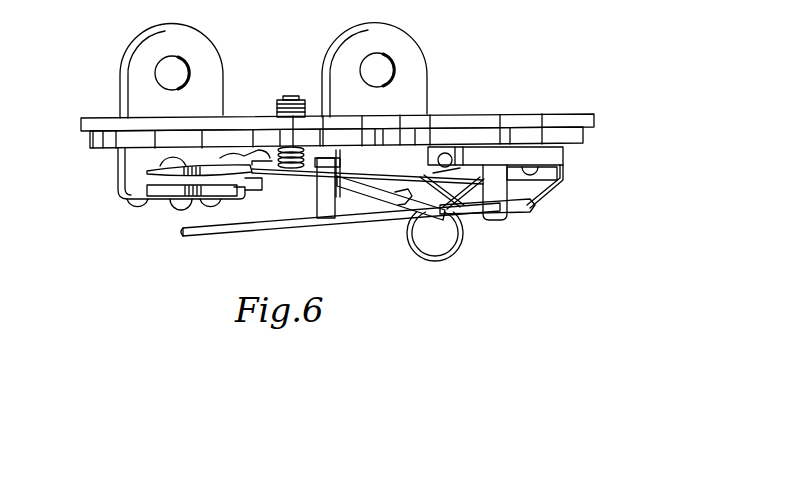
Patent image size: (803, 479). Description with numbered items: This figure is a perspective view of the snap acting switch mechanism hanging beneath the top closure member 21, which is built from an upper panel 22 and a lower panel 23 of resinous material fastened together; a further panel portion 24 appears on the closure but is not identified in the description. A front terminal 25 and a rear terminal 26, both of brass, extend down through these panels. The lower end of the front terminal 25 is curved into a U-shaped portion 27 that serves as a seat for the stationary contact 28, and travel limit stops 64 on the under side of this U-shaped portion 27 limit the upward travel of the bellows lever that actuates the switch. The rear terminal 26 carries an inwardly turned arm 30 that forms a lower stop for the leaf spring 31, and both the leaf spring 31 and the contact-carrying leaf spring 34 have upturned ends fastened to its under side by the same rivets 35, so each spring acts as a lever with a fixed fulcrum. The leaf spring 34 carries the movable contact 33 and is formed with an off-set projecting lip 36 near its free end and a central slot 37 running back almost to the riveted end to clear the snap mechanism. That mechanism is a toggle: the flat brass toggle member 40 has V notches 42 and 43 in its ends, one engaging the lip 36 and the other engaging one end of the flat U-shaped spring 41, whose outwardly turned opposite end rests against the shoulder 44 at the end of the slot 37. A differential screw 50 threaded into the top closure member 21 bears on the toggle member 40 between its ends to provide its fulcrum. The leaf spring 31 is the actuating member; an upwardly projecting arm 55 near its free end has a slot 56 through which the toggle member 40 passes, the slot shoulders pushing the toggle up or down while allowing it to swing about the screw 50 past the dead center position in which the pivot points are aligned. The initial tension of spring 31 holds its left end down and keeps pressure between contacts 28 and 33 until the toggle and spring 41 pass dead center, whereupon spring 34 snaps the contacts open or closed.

The top closure member 21 is at (360, 113).
The upper panel 22 is at (593, 120).
The lower panel 23 is at (583, 137).
The plate segment 24 is at (347, 120).
The front terminal 25 is at (135, 52).
The rear terminal 26 is at (342, 44).
The U-shaped portion 27 is at (128, 197).
The stationary contact 28 is at (157, 194).
The inwardly turned arm 30 is at (375, 203).
The leaf spring 31 is at (227, 232).
The contact 33 is at (146, 171).
The leaf spring 34 is at (308, 176).
The rivets 35 is at (562, 177).
The projecting lip 36 is at (220, 158).
The slot 37 is at (366, 177).
The toggle member 40 is at (357, 190).
The U-shaped spring 41 is at (450, 240).
The V notch 42 is at (252, 180).
The V notch 43 is at (399, 192).
The shoulder 44 is at (452, 165).
The differential screw 50 is at (277, 98).
The upwardly projecting arm 55 is at (323, 216).
The slot 56 is at (336, 171).
The travel limit stops 64 is at (202, 203).